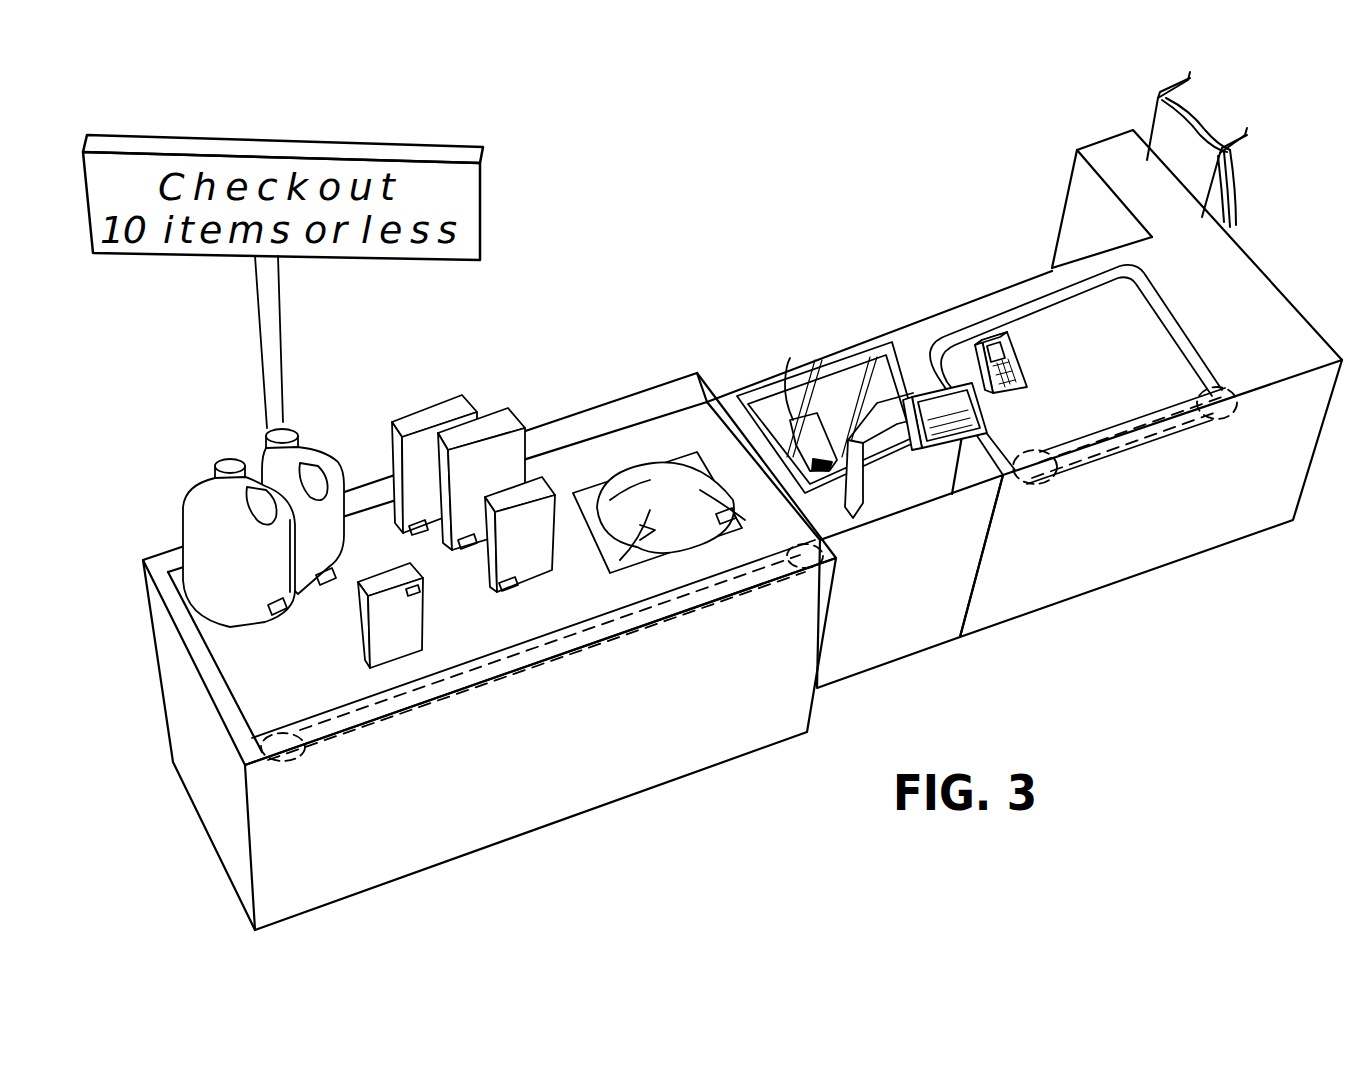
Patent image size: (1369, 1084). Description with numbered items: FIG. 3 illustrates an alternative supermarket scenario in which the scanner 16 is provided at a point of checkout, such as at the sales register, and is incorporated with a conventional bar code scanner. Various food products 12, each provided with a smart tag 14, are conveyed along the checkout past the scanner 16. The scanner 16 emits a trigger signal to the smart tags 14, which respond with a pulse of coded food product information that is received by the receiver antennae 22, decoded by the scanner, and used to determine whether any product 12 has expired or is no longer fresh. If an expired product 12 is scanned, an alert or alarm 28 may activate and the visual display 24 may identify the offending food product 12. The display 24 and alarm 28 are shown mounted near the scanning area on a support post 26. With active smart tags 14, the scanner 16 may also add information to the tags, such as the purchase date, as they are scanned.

The food products 12 is at (476, 411).
The smart tag 14 is at (420, 530).
The scanner 16 is at (792, 424).
The receiver antennae 22 is at (786, 410).
The visual display screen 24 is at (802, 422).
The support post 26 is at (862, 492).
The alarm 28 is at (913, 389).